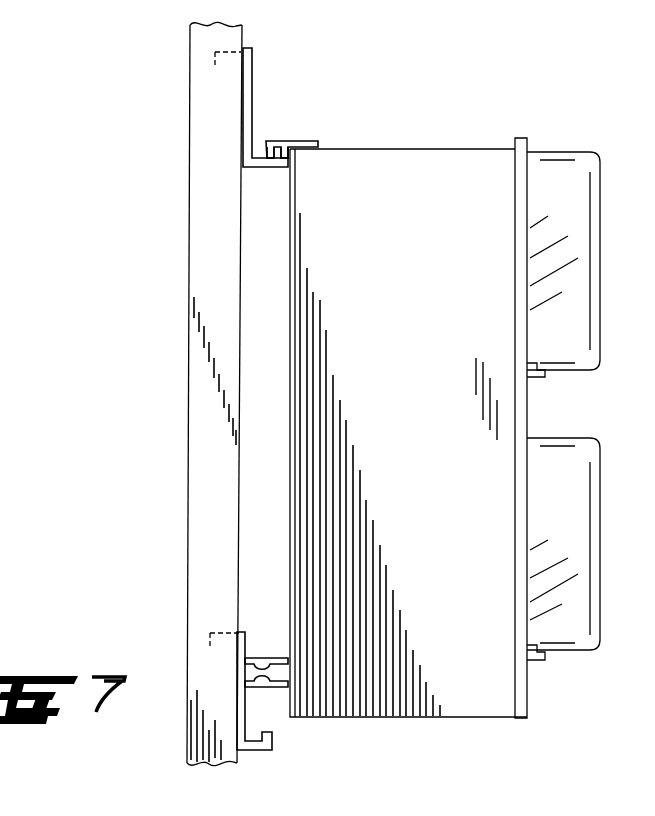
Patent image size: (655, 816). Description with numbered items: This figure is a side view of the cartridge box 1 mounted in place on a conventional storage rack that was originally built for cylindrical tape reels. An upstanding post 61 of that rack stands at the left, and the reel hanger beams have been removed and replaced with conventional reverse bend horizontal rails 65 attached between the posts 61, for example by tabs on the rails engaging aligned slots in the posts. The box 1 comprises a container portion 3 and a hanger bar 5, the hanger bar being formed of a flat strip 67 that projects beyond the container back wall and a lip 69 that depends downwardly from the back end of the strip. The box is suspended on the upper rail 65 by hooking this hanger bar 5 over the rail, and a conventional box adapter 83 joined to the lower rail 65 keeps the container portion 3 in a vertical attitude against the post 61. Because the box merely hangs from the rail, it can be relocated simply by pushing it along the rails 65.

The box 1 is at (418, 128).
The container portion 3 is at (452, 146).
The hanger bar 5 is at (312, 120).
The upstanding post 61 is at (200, 38).
The horizontal rail 65 is at (256, 58).
The flat strip 67 is at (285, 146).
The lip 69 is at (263, 150).
The box adapter 83 is at (257, 658).